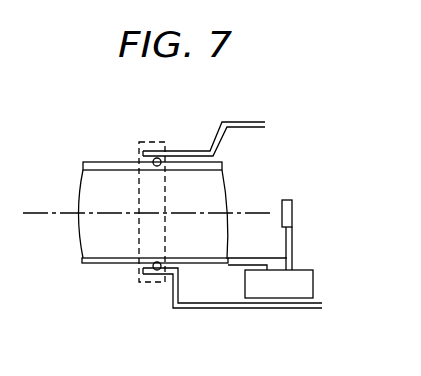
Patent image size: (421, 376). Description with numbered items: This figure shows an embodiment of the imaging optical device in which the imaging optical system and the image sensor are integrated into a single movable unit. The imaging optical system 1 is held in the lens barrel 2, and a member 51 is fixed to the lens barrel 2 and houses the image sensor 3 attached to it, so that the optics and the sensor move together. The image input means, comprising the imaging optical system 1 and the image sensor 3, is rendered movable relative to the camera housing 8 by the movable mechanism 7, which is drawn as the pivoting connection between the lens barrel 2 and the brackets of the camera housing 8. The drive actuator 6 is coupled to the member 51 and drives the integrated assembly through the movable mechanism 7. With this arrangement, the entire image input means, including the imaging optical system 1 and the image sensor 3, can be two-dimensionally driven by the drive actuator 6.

The imaging optical system 1 is at (108, 250).
The lens barrel 2 is at (109, 162).
The image sensor 3 is at (292, 208).
The drive actuator 6 is at (313, 285).
The movable mechanism 7 is at (150, 142).
The camera housing 8 is at (245, 121).
The member fixed to the lens barrel 51 is at (292, 247).